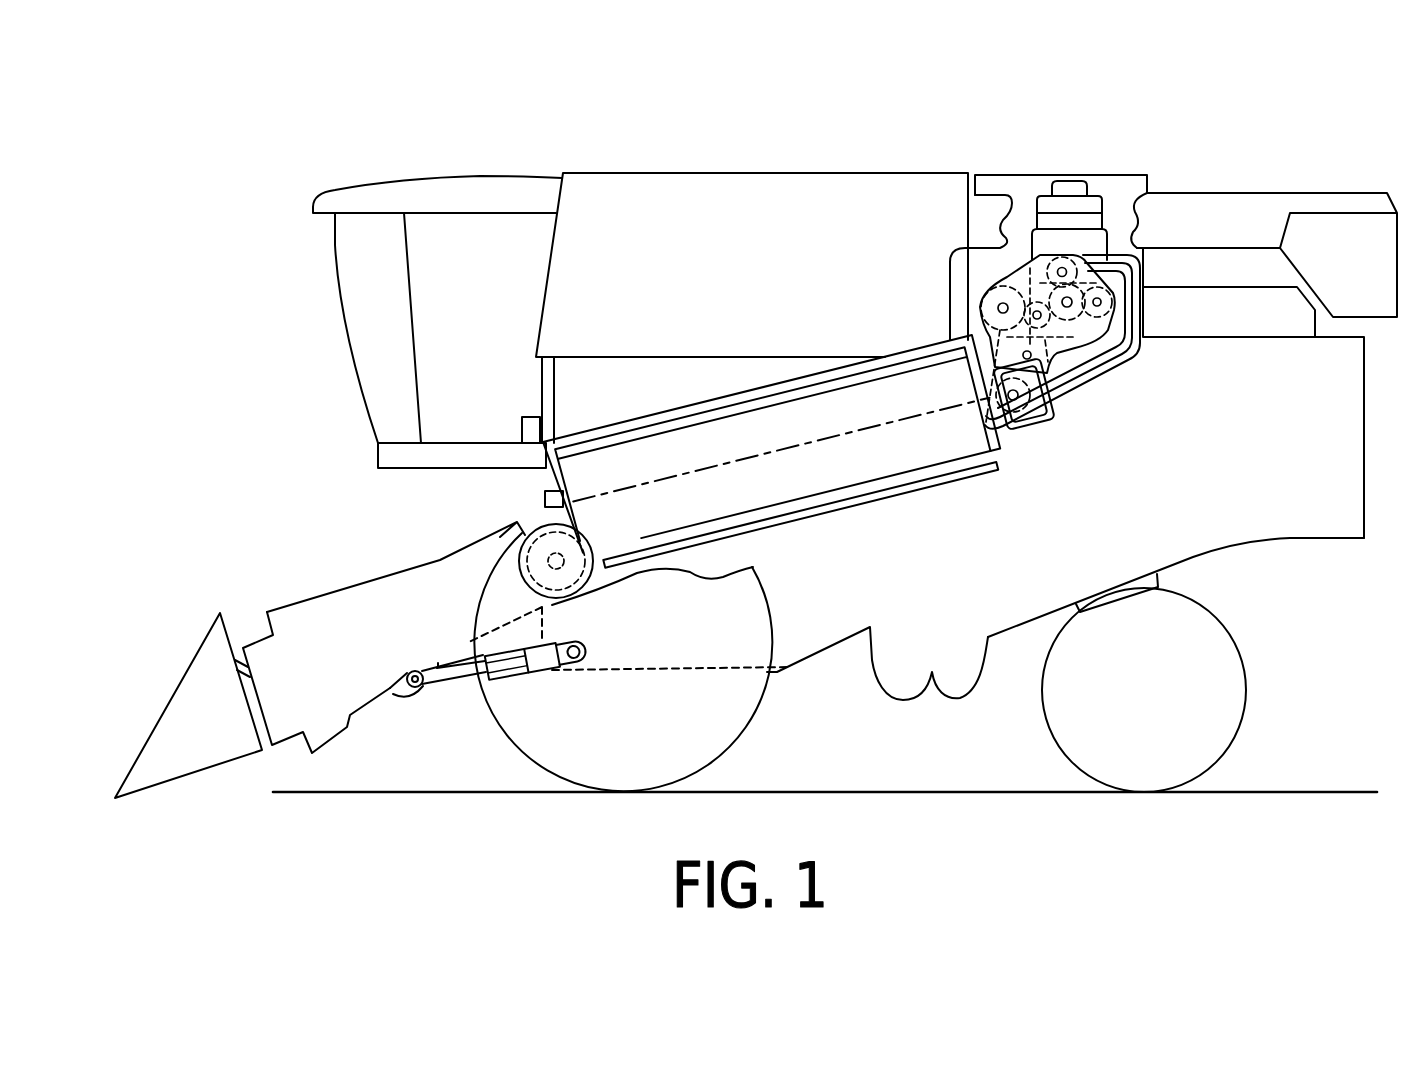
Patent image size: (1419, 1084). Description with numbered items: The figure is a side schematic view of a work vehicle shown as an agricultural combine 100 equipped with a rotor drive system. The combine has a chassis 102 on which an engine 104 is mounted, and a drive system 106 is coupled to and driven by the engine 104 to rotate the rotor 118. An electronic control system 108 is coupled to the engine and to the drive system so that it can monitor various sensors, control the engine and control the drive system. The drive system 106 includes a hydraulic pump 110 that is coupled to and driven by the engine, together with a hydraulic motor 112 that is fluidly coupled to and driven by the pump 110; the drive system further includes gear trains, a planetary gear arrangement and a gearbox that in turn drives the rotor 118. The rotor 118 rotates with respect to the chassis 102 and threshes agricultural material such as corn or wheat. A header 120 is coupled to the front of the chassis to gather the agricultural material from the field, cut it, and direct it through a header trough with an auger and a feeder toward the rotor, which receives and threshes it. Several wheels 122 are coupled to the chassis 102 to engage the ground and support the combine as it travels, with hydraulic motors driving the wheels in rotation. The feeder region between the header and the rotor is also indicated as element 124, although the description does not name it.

The agricultural combine 100 is at (782, 152).
The chassis 102 is at (852, 557).
The engine 104 is at (1070, 190).
The drive system 106 is at (1162, 393).
The electronic control system 108 is at (522, 428).
The hydraulic pump 110 is at (1045, 256).
The hydraulic motor 112 is at (1022, 430).
The rotor 118 is at (730, 410).
The header 120 is at (180, 680).
The wheels 122 is at (580, 723).
The feeder drum 124 is at (515, 533).